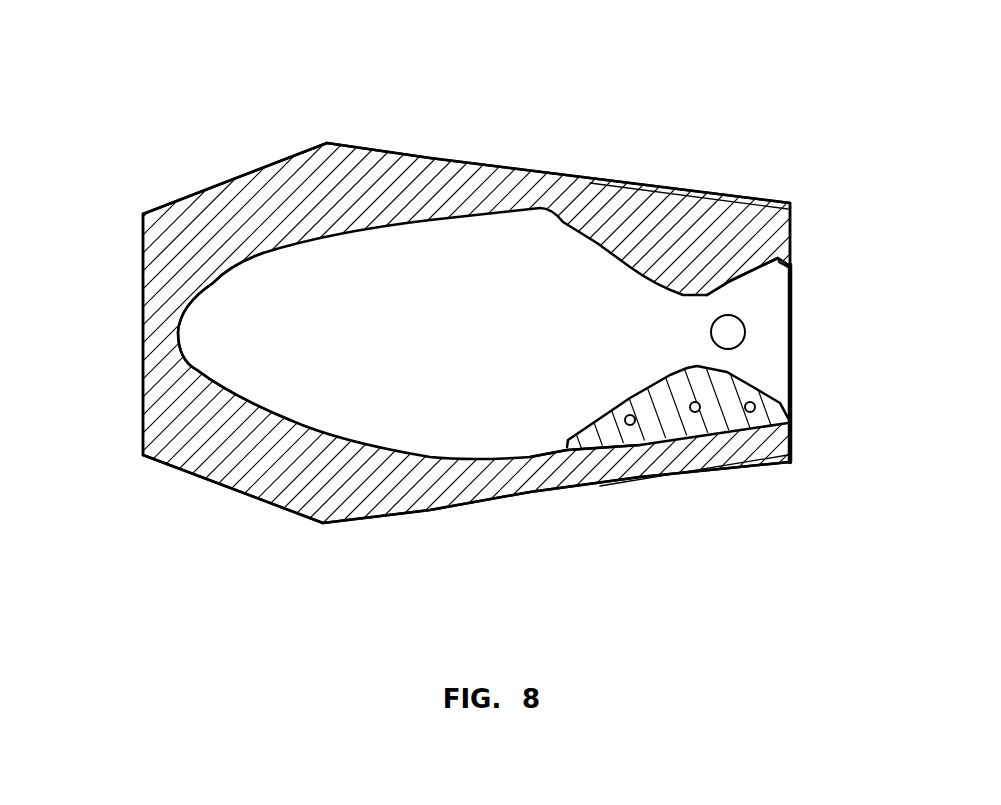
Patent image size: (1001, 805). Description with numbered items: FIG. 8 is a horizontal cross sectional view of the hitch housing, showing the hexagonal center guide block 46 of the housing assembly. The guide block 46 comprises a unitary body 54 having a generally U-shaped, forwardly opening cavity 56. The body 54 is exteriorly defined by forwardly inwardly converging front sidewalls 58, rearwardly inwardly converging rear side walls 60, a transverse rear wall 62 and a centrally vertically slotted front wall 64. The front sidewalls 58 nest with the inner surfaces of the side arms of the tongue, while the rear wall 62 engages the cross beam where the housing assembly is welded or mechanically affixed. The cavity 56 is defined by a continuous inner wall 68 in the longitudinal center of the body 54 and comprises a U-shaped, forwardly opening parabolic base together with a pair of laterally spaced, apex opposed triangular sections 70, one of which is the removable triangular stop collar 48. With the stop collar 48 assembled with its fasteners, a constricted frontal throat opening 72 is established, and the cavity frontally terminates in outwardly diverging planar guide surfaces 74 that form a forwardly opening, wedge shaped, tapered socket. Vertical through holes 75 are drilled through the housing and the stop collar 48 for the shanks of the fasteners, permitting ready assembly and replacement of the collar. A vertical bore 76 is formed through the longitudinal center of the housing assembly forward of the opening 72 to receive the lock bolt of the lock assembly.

The center guide block 46 is at (173, 495).
The stop collar 48 is at (737, 388).
The body 54 is at (220, 202).
The cavity 56 is at (483, 333).
The front sidewalls 58 is at (510, 166).
The rear side walls 60 is at (303, 150).
The rear wall 62 is at (143, 381).
The front wall 64 is at (793, 220).
The inner wall 68 is at (238, 317).
The triangular sections 70 is at (617, 242).
The frontal throat opening 72 is at (707, 304).
The guide surfaces 74 is at (790, 270).
The passage 75 is at (629, 423).
The vertical bore 76 is at (728, 327).